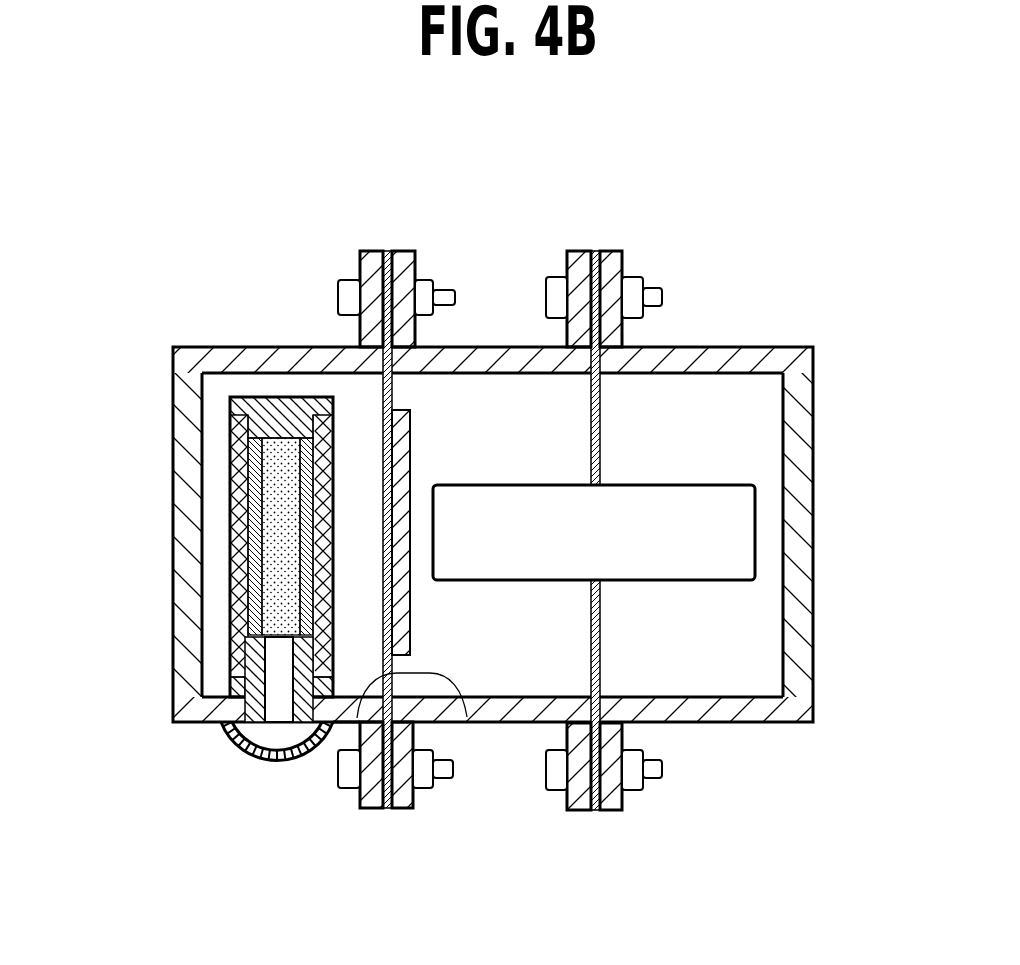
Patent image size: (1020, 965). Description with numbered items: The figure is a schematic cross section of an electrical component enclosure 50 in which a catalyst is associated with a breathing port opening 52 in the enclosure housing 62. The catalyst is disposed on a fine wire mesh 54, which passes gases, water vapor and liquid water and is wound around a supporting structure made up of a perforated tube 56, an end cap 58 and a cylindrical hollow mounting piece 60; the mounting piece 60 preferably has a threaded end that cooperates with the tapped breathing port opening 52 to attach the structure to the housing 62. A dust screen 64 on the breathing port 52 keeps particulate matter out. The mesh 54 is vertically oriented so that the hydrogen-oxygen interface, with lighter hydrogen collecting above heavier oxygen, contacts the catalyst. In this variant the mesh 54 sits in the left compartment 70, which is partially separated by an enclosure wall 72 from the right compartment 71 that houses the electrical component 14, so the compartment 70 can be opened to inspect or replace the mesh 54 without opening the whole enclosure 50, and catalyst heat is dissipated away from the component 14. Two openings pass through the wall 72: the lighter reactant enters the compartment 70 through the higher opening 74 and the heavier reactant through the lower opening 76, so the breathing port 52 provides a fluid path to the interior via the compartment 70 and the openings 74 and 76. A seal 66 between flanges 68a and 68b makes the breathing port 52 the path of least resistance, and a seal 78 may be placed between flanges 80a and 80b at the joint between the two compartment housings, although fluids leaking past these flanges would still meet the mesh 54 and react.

The electrical component 14 is at (610, 556).
The electrical component enclosure 50 is at (330, 162).
The breathing port opening 52 is at (282, 712).
The fine wire mesh 54 is at (229, 497).
The perforated tube 56 is at (277, 468).
The end cap 58 is at (270, 408).
The cylindrical hollow mounting piece 60 is at (227, 683).
The enclosure housing 62 is at (752, 355).
The dust screen 64 is at (280, 760).
The seal 66 is at (602, 442).
The flange 68a is at (575, 255).
The flange 68b is at (610, 252).
The left compartment 70 is at (213, 553).
The right compartment 71 is at (752, 628).
The enclosure wall 72 is at (380, 448).
The higher opening 74 is at (460, 383).
The lower opening 76 is at (467, 717).
The seal 78 is at (345, 722).
The flange 80a is at (368, 252).
The flange 80b is at (400, 250).